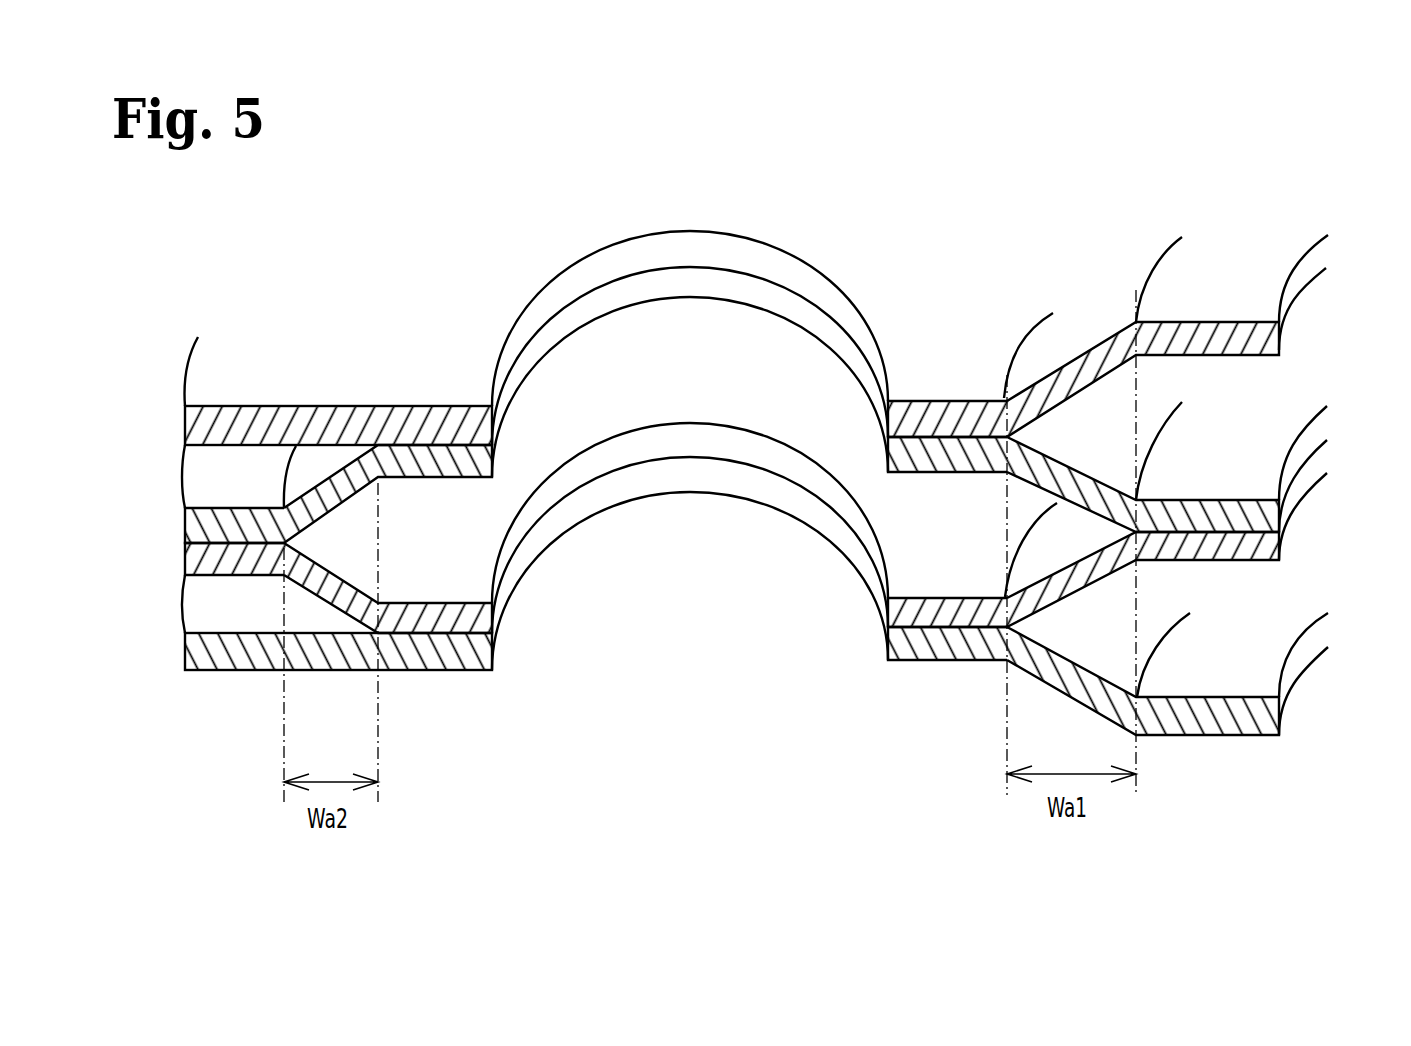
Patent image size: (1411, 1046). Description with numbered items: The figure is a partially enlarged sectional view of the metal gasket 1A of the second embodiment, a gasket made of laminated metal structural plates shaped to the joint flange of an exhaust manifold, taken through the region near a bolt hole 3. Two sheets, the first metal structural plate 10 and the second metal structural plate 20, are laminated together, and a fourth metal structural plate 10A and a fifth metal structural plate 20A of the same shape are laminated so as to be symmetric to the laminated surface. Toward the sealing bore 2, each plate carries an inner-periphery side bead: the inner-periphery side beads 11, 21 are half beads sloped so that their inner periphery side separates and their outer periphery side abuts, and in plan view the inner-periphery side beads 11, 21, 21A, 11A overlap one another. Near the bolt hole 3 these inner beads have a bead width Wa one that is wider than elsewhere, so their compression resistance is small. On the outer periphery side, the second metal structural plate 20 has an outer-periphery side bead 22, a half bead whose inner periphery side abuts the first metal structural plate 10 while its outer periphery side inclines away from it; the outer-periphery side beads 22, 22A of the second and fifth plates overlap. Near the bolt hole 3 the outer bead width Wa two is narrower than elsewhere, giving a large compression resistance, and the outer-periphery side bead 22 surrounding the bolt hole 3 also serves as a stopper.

The metal gasket 1A is at (287, 465).
The sealing bore 2 is at (1145, 485).
The bolt hole 3 is at (718, 633).
The first metal structural plate 10 is at (195, 428).
The fourth metal structural plate 10A is at (195, 657).
The inner-periphery side bead 11 is at (1103, 353).
The inner-periphery side bead 11A is at (1067, 681).
The second metal structural plate 20 is at (195, 530).
The fifth metal structural plate 20A is at (195, 568).
The inner-periphery side bead 21 is at (1027, 477).
The inner-periphery side bead 21A is at (1099, 586).
The outer-periphery side bead 22 is at (347, 477).
The outer-periphery side bead 22A is at (391, 540).